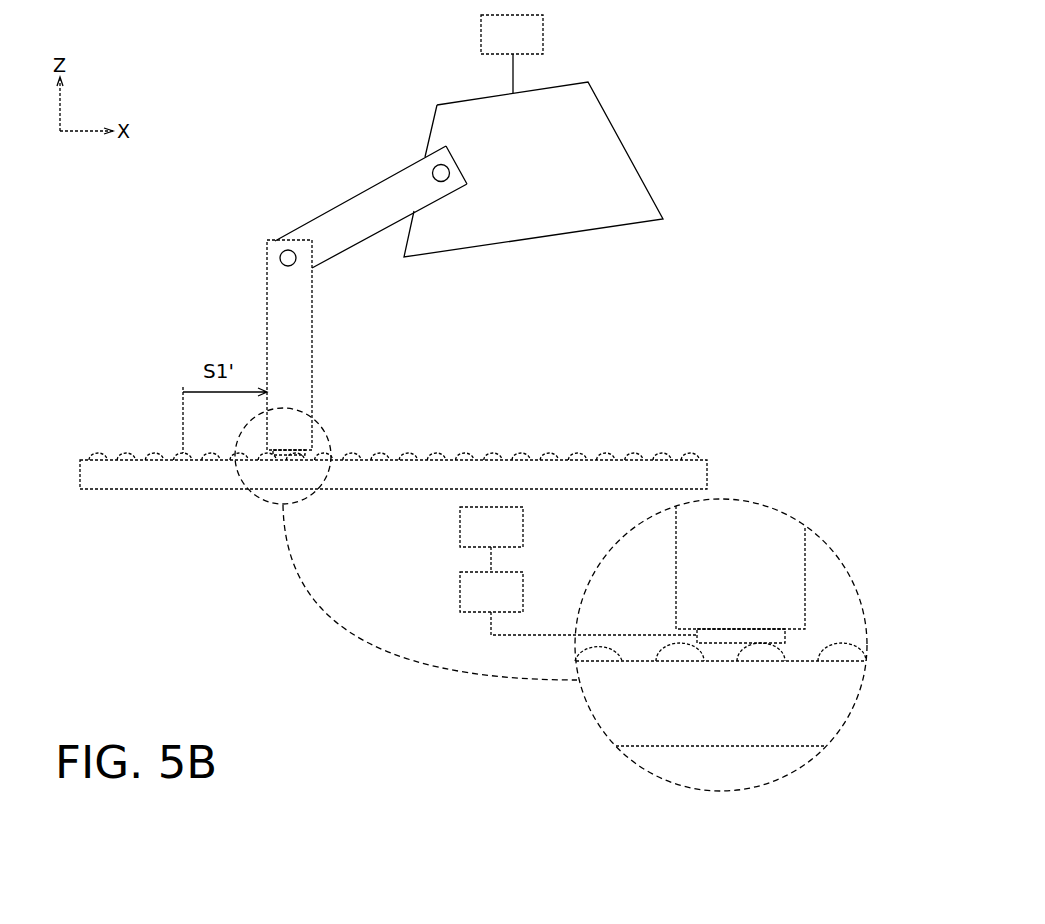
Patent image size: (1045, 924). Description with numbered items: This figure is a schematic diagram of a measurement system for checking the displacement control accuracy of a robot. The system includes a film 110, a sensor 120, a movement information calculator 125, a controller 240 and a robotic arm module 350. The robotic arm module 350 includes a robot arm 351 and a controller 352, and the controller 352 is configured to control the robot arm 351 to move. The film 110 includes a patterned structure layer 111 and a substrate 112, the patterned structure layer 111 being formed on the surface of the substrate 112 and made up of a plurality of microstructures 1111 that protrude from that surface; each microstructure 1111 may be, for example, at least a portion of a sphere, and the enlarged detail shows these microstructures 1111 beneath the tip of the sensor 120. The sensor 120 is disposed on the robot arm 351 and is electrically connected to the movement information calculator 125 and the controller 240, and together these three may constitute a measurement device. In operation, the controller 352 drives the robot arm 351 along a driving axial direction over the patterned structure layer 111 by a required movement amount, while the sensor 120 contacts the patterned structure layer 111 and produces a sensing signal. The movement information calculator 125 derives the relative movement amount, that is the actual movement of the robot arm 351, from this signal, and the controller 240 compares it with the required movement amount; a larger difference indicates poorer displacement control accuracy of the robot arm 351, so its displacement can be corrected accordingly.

The robotic arm module 350 is at (375, 82).
The robot arm 351 is at (363, 190).
The controller 352 is at (532, 47).
The film 110 is at (459, 458).
The patterned structure layer 111 is at (703, 455).
The substrate 112 is at (697, 477).
The sensor 120 is at (767, 635).
The microstructure 1111 is at (787, 652).
The controller 240 is at (511, 539).
The movement information calculator 125 is at (511, 604).